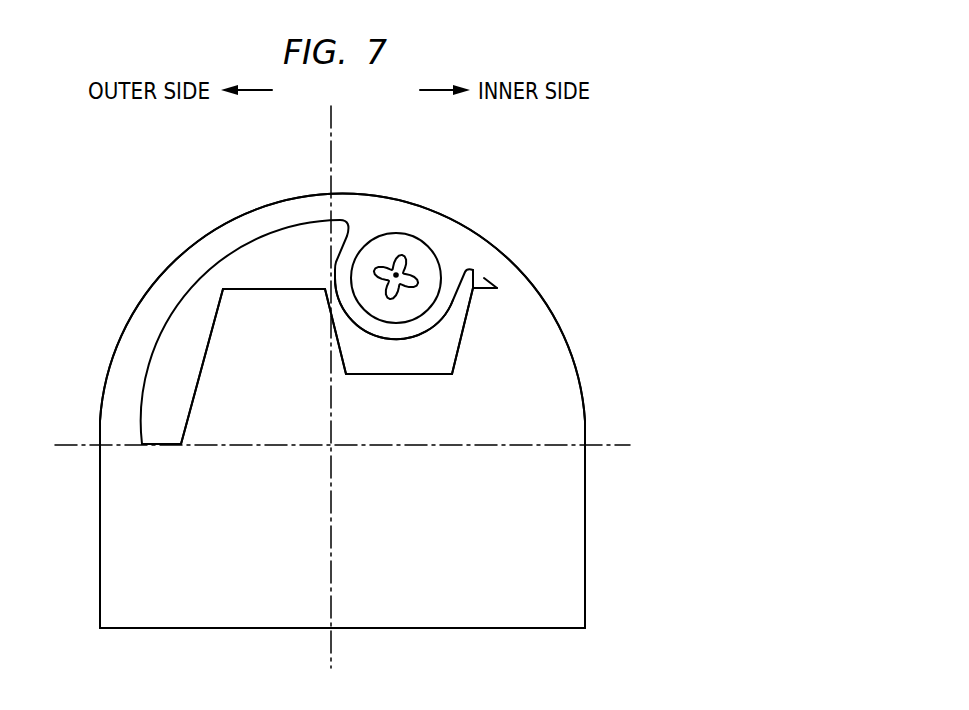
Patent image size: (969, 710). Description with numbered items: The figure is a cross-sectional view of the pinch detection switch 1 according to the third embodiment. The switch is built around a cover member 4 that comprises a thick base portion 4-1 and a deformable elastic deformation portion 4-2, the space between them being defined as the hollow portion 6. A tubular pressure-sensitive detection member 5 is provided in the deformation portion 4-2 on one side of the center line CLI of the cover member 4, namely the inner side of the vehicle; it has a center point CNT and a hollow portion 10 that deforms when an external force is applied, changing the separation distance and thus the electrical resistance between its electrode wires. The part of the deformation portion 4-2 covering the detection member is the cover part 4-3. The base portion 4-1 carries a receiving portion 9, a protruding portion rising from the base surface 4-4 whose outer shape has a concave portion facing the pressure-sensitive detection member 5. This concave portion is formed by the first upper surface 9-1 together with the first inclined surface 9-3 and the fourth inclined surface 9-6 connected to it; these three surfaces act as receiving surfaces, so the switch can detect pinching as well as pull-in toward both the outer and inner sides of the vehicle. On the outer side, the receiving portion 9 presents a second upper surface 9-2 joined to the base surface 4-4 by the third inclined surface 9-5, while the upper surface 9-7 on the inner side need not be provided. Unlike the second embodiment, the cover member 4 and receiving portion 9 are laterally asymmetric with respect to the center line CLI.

The pinch detection switch 1 is at (640, 261).
The cover member 4 is at (583, 397).
The base portion 4-1 is at (565, 545).
The deformation portion 4-2 is at (447, 228).
The cover part 4-3 is at (400, 333).
The base surface 4-4 is at (616, 445).
The pressure-sensitive detection member 5 is at (413, 247).
The hollow portion 6 is at (182, 317).
The receiving portion 9 is at (213, 402).
The first upper surface 9-1 is at (414, 367).
The second upper surface 9-2 is at (250, 279).
The first inclined surface 9-3 is at (352, 353).
The third inclined surface 9-5 is at (190, 367).
The fourth inclined surface 9-6 is at (448, 353).
The upper surface 9-7 is at (488, 276).
The hollow portion 10 is at (372, 267).
The center line CLI is at (326, 132).
The center point CNT is at (393, 268).